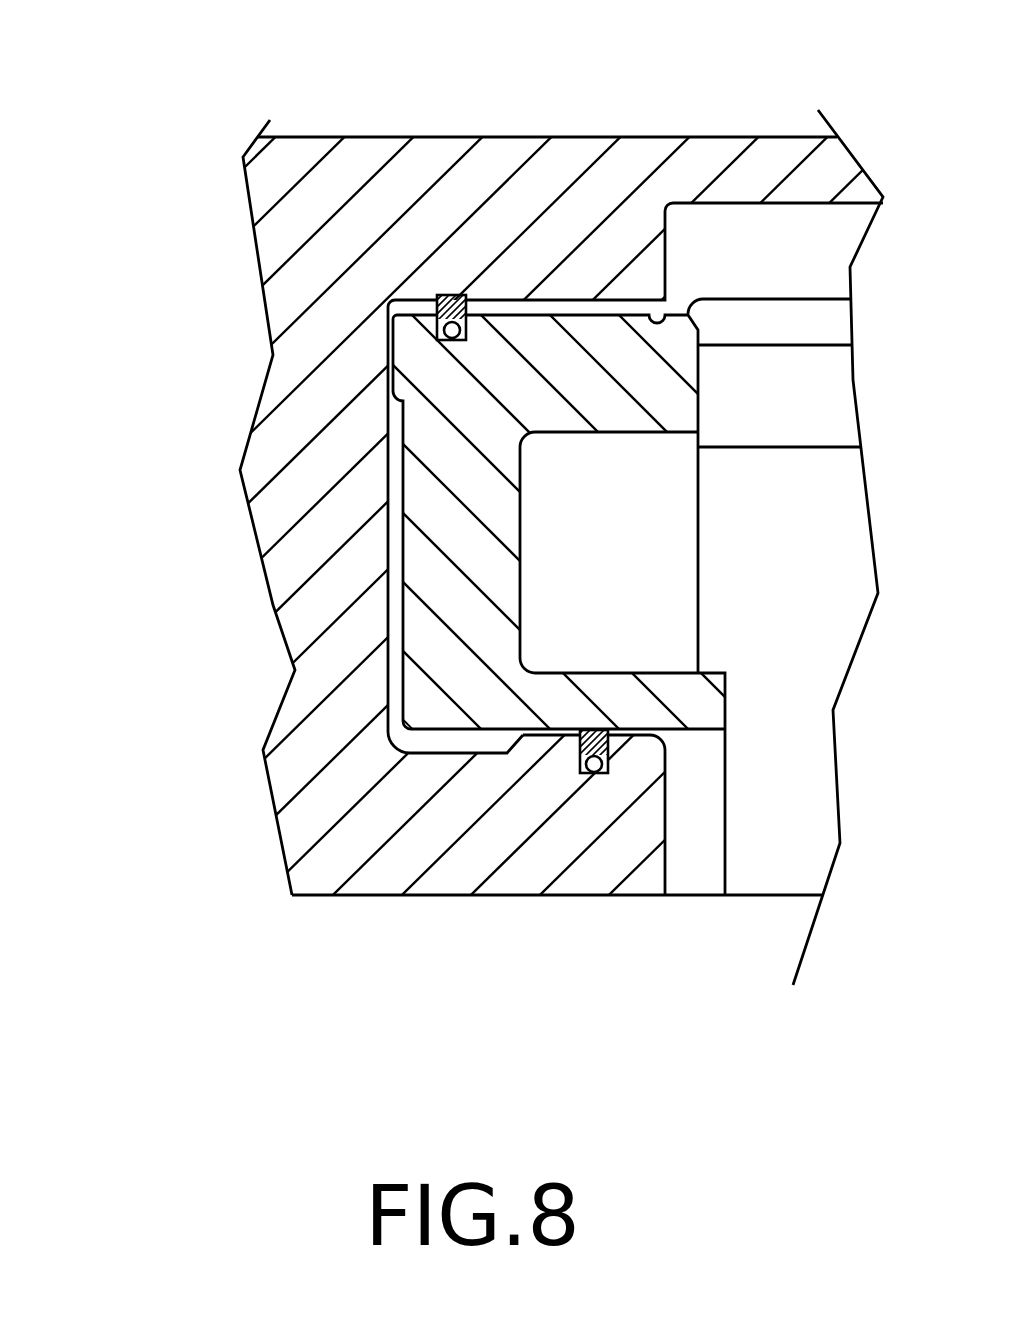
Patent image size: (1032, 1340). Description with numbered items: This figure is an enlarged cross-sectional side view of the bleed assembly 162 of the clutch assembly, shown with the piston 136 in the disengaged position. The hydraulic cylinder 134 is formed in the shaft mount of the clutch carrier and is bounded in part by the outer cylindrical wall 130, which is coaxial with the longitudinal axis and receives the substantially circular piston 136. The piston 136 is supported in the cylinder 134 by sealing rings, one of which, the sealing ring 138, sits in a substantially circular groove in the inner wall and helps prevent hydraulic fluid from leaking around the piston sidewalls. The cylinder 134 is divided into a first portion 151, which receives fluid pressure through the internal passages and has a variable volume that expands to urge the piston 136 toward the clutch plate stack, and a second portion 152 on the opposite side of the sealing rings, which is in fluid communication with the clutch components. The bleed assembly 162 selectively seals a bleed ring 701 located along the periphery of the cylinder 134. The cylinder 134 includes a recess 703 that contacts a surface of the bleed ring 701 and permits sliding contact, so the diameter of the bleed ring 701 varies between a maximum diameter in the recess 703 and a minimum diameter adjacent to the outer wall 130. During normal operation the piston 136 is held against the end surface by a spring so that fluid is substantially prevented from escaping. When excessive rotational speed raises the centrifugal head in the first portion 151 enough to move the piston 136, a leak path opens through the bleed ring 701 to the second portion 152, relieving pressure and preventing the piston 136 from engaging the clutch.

The outer cylindrical wall 130 is at (577, 300).
The hydraulic cylinder 134 is at (320, 612).
The piston 136 is at (424, 555).
The sealing ring 138 is at (512, 822).
The first portion of cylinder 151 is at (396, 428).
The second portion of cylinder 152 is at (614, 307).
The bleed assembly 162 is at (456, 252).
The bleed ring 701 is at (437, 300).
The recess 703 is at (478, 297).